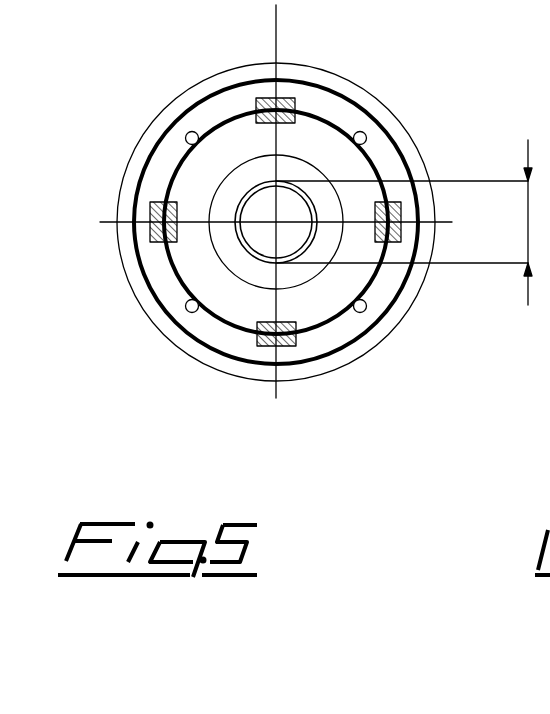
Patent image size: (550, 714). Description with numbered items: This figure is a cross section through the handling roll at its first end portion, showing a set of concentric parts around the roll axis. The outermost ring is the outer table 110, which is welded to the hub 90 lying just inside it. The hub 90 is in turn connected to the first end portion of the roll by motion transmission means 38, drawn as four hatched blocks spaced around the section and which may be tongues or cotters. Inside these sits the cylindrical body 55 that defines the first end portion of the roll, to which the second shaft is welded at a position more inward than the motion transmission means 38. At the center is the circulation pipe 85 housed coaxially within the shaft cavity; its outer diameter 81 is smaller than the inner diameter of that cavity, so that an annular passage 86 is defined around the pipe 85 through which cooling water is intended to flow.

The outer table 110 is at (193, 95).
The hub 90 is at (155, 268).
The cylindrical body 55 is at (195, 271).
The motion transmission means 38 is at (154, 208).
The annular passage 86 is at (245, 267).
The circulation pipe 85 is at (296, 255).
The outer diameter 81 is at (528, 240).